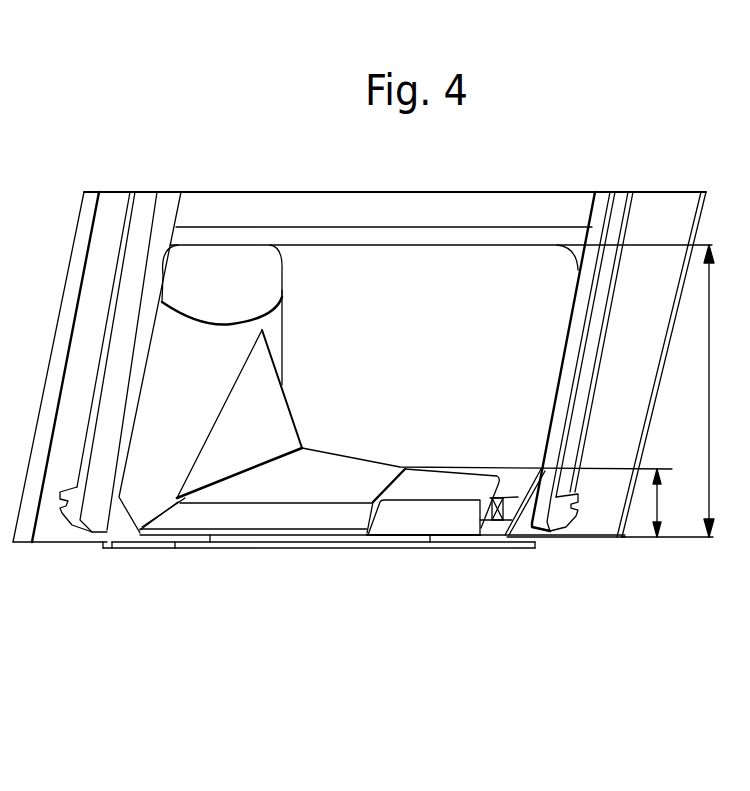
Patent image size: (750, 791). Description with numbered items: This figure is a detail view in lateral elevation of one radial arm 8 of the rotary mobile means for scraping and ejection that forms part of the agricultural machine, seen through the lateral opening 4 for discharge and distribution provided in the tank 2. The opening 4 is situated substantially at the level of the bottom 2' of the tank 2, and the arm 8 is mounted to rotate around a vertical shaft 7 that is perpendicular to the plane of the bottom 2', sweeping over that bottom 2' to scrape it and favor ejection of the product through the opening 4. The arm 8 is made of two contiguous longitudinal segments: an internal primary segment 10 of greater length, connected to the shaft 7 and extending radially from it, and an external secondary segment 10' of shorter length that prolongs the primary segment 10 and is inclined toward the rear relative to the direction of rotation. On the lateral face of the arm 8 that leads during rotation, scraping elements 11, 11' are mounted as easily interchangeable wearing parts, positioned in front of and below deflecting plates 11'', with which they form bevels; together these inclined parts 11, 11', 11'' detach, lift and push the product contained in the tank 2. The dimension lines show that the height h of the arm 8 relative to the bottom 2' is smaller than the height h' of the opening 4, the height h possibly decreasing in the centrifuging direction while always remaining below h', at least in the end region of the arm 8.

The tank 2 is at (96, 367).
The bottom of tank 2' is at (599, 409).
The sealable opening 4 is at (435, 245).
The vertical shaft 7 is at (187, 365).
The radial arm 8 is at (406, 545).
The internal primary segment 10 is at (256, 602).
The external secondary segment 10' is at (411, 603).
The scraping element 11 is at (256, 574).
The scraping element 11' is at (418, 575).
The deflecting plate 11'' is at (424, 490).
The height of arm h is at (667, 503).
The height of opening h' is at (680, 391).